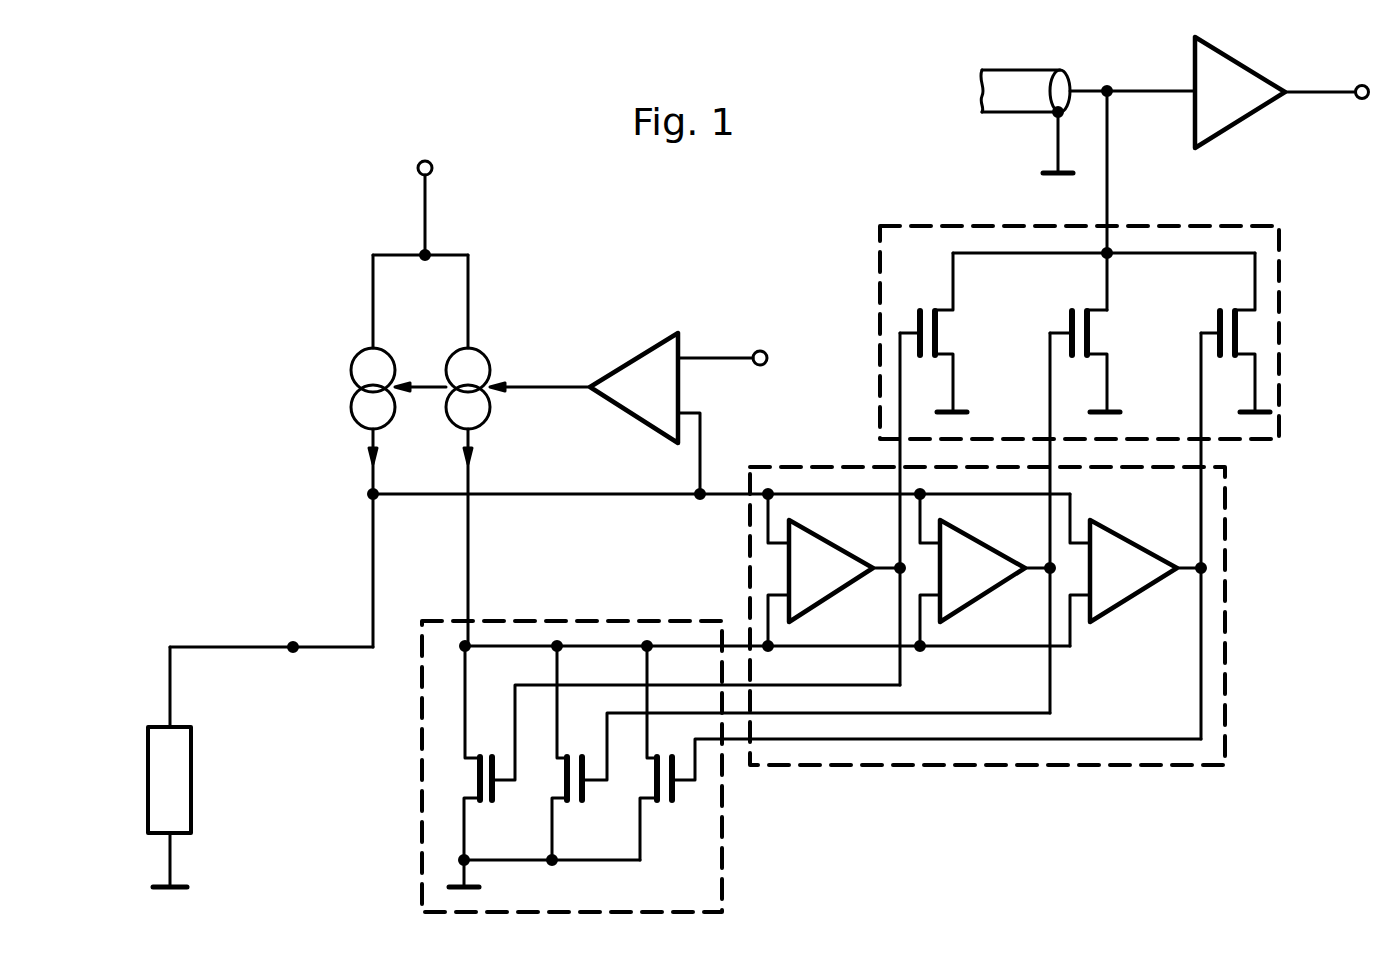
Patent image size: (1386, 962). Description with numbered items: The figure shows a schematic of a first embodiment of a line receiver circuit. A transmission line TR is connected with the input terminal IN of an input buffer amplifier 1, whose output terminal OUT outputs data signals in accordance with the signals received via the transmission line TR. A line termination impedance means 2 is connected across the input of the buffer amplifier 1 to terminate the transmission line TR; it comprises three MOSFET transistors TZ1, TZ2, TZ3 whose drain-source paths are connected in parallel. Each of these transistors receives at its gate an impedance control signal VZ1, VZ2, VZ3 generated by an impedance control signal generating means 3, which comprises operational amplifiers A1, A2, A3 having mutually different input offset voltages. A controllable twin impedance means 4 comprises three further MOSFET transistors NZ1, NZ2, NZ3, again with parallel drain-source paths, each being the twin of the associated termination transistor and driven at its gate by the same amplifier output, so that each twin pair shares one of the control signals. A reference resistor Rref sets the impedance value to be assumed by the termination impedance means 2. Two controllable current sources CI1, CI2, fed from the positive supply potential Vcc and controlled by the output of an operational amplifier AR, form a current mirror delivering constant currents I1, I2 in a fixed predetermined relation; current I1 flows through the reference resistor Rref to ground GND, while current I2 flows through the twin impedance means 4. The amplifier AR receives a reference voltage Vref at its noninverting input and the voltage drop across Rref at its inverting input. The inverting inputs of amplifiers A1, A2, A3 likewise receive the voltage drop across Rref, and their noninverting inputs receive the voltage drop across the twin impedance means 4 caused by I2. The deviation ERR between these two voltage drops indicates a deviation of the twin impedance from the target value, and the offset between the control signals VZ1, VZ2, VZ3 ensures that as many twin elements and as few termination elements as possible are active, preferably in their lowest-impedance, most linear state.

The input buffer amplifier 1 is at (1253, 70).
The line termination impedance means 2 is at (1282, 298).
The impedance control signal generating means 3 is at (1225, 633).
The controllable twin impedance means 4 is at (722, 868).
The transmission line TR is at (985, 82).
The input terminal IN is at (1157, 95).
The output terminal OUT is at (1358, 100).
The MOSFET transistor TZ1 is at (931, 310).
The MOSFET transistor TZ2 is at (1081, 310).
The MOSFET transistor TZ3 is at (1229, 310).
The operational amplifier A1 is at (831, 541).
The operational amplifier A2 is at (975, 541).
The operational amplifier A3 is at (1135, 541).
The impedance control signal VZ1 is at (828, 685).
The impedance control signal VZ2 is at (982, 713).
The impedance control signal VZ3 is at (1133, 739).
The MOSFET transistor NZ1 is at (487, 798).
The MOSFET transistor NZ2 is at (577, 798).
The MOSFET transistor NZ3 is at (665, 798).
The controllable current source CI1 is at (352, 365).
The controllable current source CI2 is at (488, 357).
The constant current I1 is at (384, 461).
The constant current I2 is at (480, 461).
The deviation ERR is at (470, 560).
The operational amplifier AR is at (630, 357).
The reference voltage Vref is at (722, 344).
The positive power supply potential Vcc is at (440, 210).
The reference resistor Rref is at (178, 793).
The ground potential GND is at (189, 868).